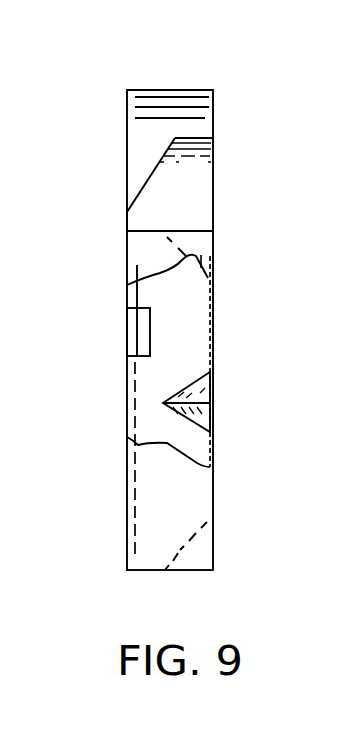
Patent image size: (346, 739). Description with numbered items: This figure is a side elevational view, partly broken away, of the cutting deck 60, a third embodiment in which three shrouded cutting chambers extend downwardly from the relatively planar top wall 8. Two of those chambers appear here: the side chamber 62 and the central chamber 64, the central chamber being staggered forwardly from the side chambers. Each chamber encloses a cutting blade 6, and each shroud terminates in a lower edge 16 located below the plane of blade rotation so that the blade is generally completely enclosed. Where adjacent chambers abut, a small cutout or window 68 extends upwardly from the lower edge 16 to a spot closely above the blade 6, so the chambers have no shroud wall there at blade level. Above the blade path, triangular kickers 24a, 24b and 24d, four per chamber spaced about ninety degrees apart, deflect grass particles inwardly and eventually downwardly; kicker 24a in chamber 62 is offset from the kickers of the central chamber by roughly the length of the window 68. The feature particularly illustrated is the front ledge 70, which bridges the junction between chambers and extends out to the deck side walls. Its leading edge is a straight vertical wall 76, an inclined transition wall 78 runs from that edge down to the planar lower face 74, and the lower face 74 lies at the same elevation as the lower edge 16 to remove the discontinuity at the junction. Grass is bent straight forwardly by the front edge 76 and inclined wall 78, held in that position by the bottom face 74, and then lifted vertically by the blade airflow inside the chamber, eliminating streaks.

The cutting deck 60 is at (232, 198).
The shrouded cutting chamber 64 is at (166, 98).
The front ledge 70 is at (143, 135).
The straight vertical wall 76 is at (195, 138).
The inclined transition wall 78 is at (147, 181).
The planar lower face 74 is at (127, 222).
The lower edge 16 is at (126, 250).
The triangular kicker 24b is at (200, 258).
The top wall 8 is at (212, 325).
The window 68 is at (153, 335).
The cutting blade 6 is at (134, 323).
The triangular kicker 24a is at (203, 408).
The shrouded cutting chamber 62 is at (196, 476).
The triangular kicker 24d is at (183, 556).